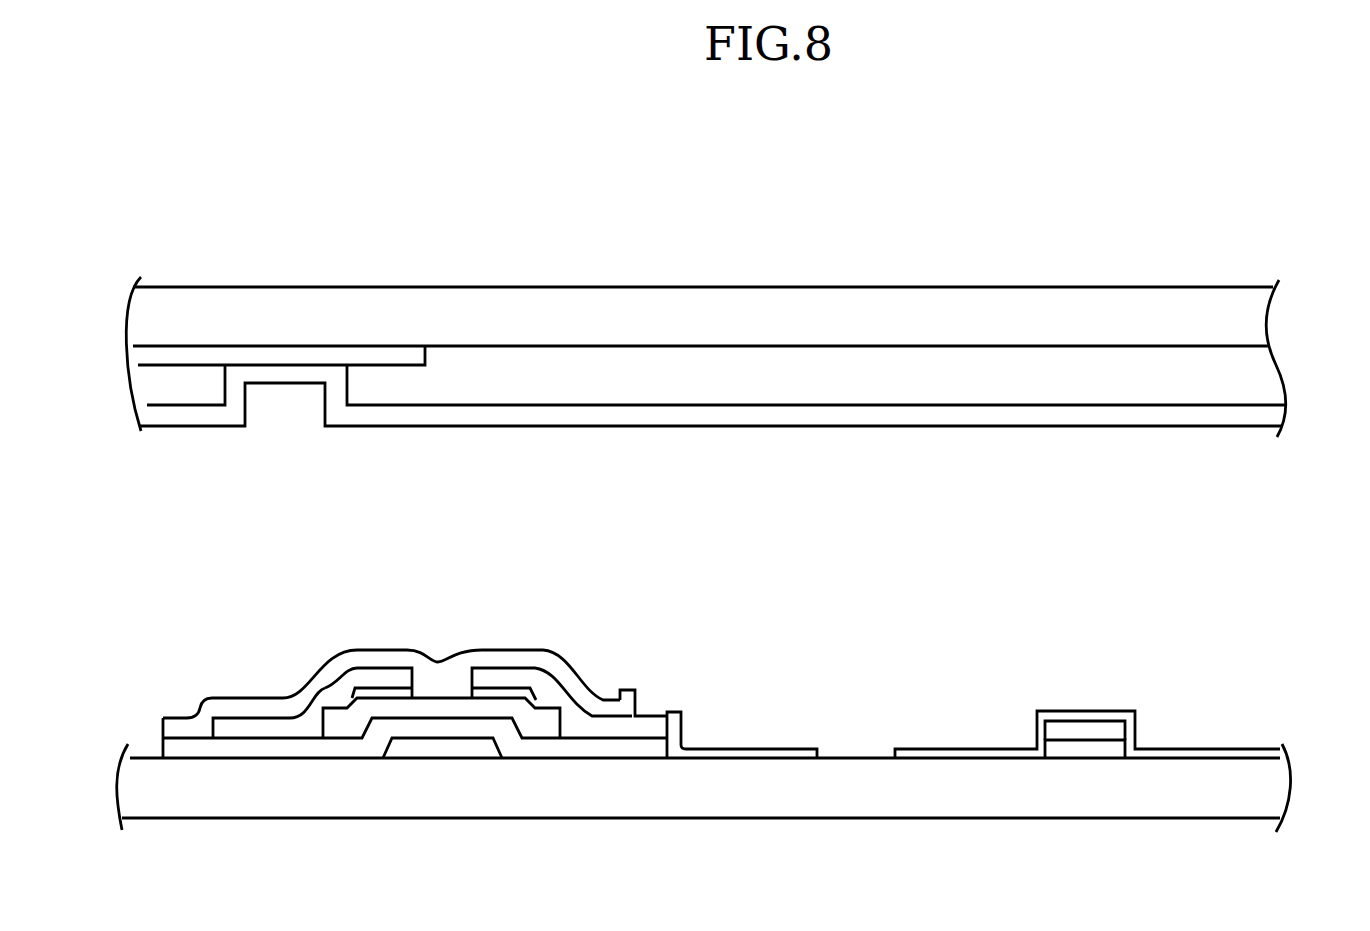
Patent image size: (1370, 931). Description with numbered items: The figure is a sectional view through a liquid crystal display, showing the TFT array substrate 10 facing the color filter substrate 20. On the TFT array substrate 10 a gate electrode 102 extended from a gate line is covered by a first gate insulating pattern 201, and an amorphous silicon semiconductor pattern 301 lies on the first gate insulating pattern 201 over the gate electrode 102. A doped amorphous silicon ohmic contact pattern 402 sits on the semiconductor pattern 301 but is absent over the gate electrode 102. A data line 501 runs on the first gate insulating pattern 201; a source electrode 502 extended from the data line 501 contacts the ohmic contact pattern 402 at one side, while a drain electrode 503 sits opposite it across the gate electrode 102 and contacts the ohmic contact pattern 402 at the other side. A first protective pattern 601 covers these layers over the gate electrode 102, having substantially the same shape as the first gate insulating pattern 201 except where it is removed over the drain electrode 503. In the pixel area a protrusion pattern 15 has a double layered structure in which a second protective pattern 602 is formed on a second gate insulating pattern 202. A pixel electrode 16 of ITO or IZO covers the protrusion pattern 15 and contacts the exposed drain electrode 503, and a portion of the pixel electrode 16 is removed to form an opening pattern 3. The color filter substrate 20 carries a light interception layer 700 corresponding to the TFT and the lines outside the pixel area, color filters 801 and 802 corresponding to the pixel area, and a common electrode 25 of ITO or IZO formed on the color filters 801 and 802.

The color filter substrate 20 is at (1257, 320).
The light interception layer 700 is at (366, 355).
The color filter 801 is at (1278, 385).
The color filter 802 is at (195, 393).
The common electrode 25 is at (1277, 420).
The TFT array substrate 10 is at (1278, 797).
The gate electrode 102 is at (440, 758).
The pixel electrode 16 is at (735, 748).
The semiconductor pattern 301 is at (332, 727).
The ohmic contact pattern 402 is at (393, 693).
The data line 501 is at (228, 727).
The source electrode 502 is at (355, 680).
The drain electrode 503 is at (523, 672).
The first protective pattern 601 is at (491, 656).
The first gate insulating pattern 201 is at (652, 750).
The second gate insulating pattern 202 is at (1108, 753).
The second protective pattern 602 is at (1067, 732).
The protrusion pattern 15 is at (1170, 675).
The opening pattern 3 is at (857, 750).